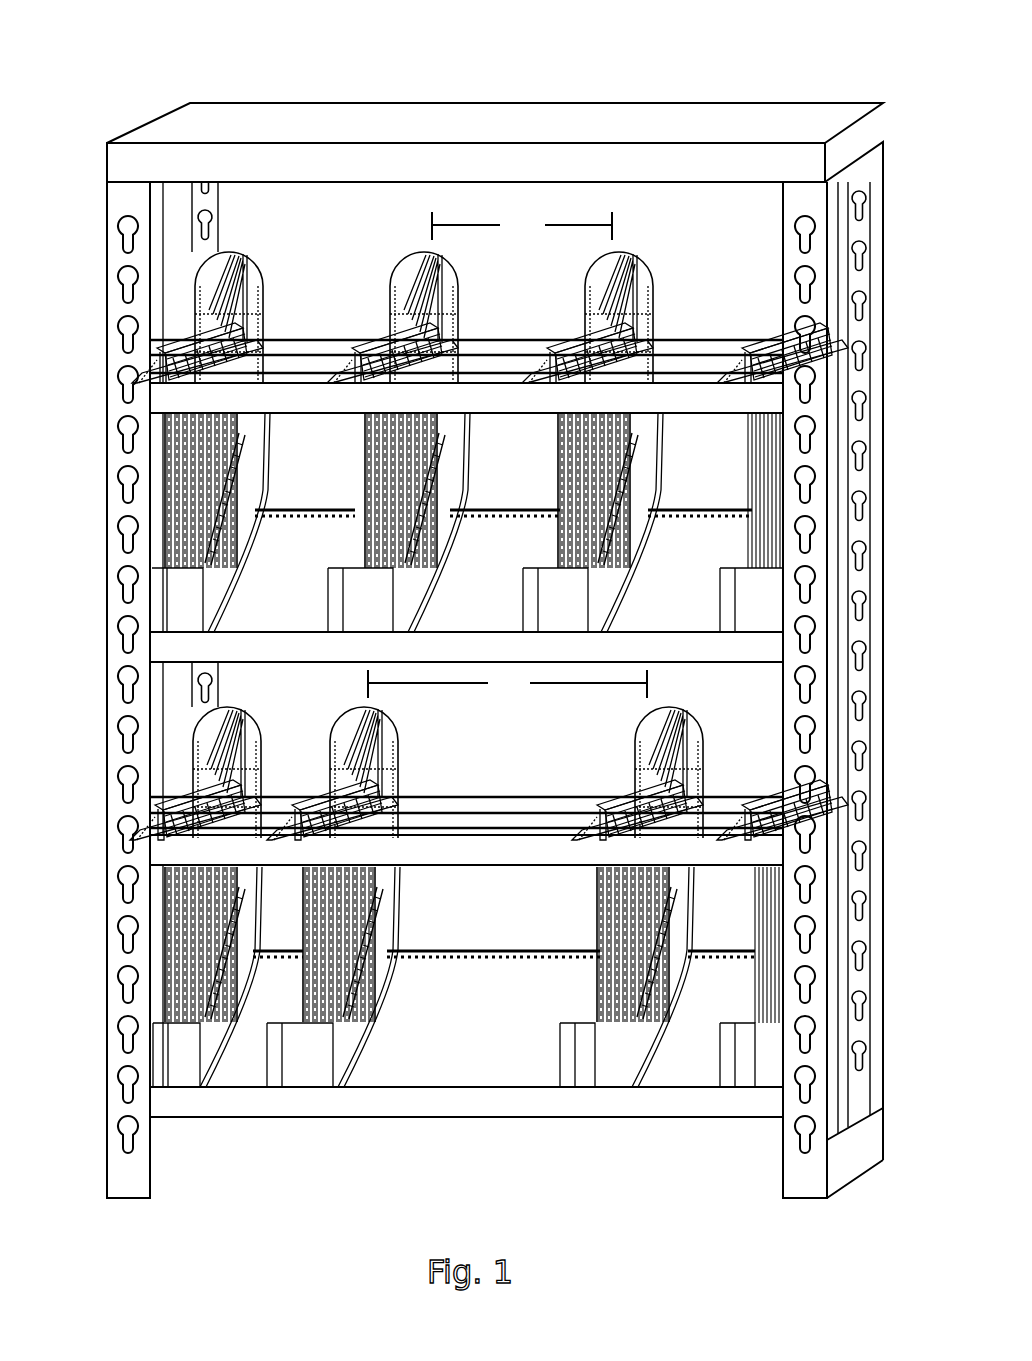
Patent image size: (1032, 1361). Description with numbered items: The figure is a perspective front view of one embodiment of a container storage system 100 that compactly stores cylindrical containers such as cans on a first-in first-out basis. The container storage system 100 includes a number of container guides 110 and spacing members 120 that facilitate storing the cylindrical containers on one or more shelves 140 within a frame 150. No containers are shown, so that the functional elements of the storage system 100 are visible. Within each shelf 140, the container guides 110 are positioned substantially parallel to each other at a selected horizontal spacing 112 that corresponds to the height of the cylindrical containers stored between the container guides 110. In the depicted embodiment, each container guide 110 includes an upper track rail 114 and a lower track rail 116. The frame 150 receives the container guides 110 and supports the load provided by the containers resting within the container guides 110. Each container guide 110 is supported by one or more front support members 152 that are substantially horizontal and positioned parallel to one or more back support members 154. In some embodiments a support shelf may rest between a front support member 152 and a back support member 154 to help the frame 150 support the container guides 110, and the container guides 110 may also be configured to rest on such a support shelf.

The container storage system 100 is at (70, 52).
The container guide 110 is at (252, 256).
The horizontal spacing 112 is at (507, 455).
The upper track rail 114 is at (372, 342).
The lower track rail 116 is at (205, 548).
The spacing member 120 is at (532, 510).
The shelf 140 is at (78, 464).
The frame 150 is at (537, 117).
The front support member 152 is at (300, 402).
The back support member 154 is at (300, 350).